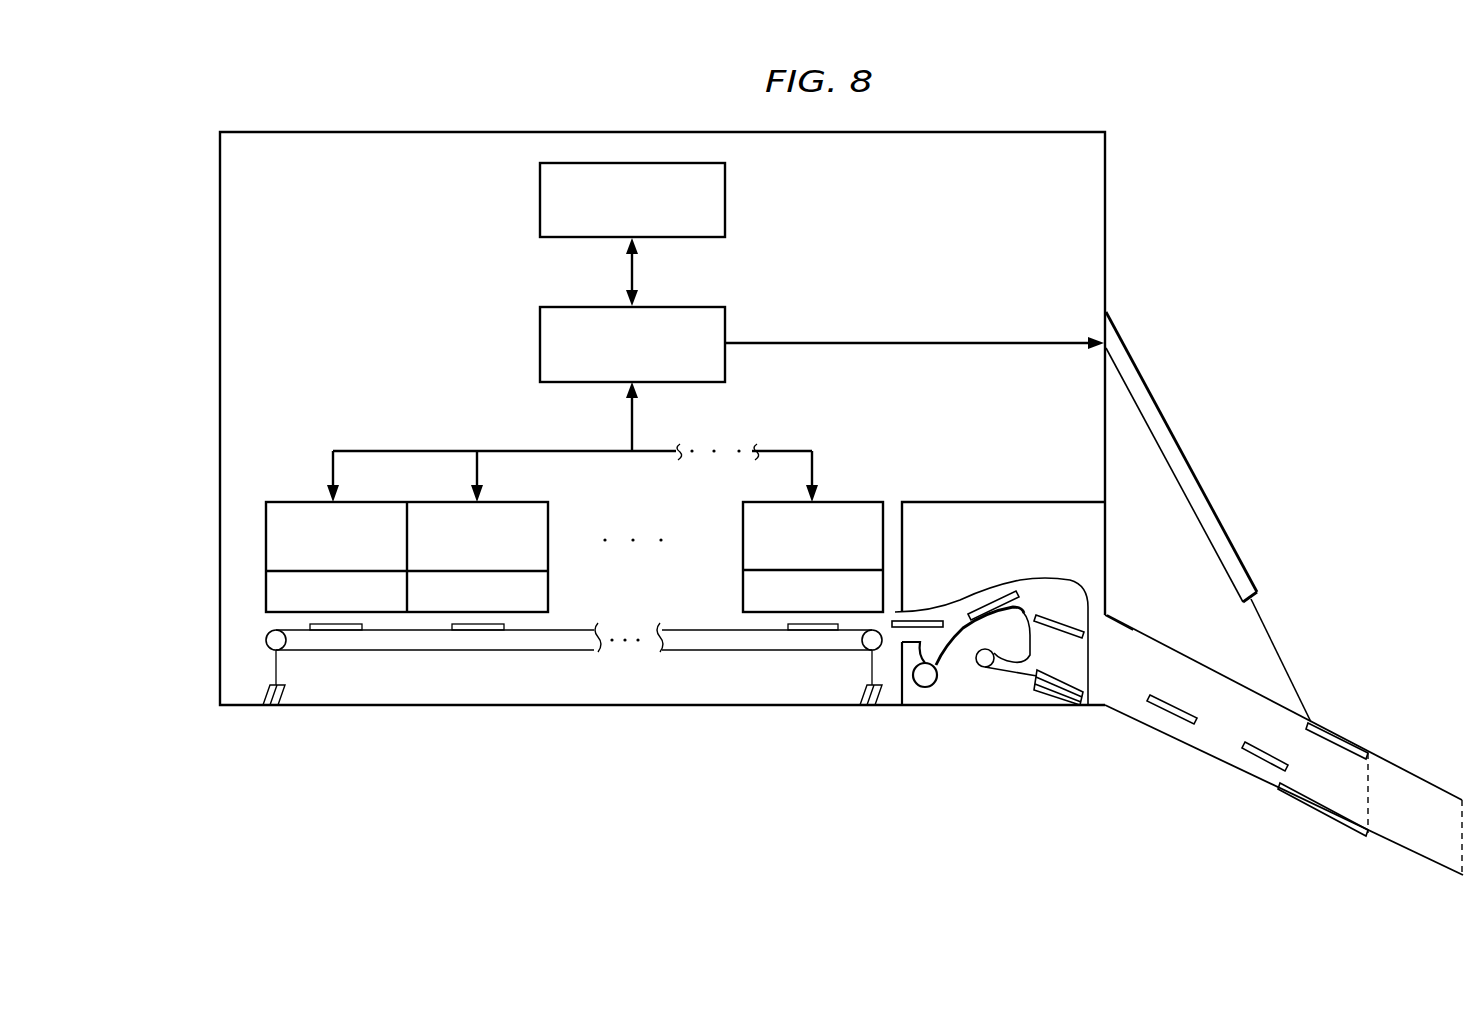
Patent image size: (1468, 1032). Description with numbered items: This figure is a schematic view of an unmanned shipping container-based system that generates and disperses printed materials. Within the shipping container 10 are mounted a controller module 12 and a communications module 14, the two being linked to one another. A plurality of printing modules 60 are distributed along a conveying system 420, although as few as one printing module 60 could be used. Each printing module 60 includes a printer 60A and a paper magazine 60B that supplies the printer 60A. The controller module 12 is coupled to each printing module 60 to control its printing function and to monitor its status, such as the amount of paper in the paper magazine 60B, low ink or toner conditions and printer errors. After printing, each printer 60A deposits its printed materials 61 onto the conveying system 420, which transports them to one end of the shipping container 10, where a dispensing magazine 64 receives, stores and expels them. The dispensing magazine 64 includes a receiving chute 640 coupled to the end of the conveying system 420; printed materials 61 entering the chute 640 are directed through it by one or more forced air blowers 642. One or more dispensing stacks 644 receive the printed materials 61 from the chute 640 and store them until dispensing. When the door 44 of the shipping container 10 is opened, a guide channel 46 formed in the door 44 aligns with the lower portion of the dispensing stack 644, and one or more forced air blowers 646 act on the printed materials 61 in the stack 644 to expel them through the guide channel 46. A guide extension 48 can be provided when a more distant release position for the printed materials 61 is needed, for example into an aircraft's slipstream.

The shipping container 10 is at (1107, 196).
The controller module 12 is at (540, 338).
The communications module 14 is at (725, 193).
The printing module 60 is at (266, 568).
The printer 60A is at (266, 591).
The paper magazine 60B is at (283, 502).
The printed materials 61 is at (504, 627).
The dispensing magazine 64 is at (990, 502).
The receiving chute 640 is at (952, 604).
The forced air blower 642 is at (925, 688).
The dispensing stack 644 is at (1053, 696).
The forced air blower 646 is at (983, 668).
The conveying system 420 is at (282, 647).
The door 44 is at (1318, 808).
The guide channel 46 is at (1216, 740).
The guide extension 48 is at (1400, 770).